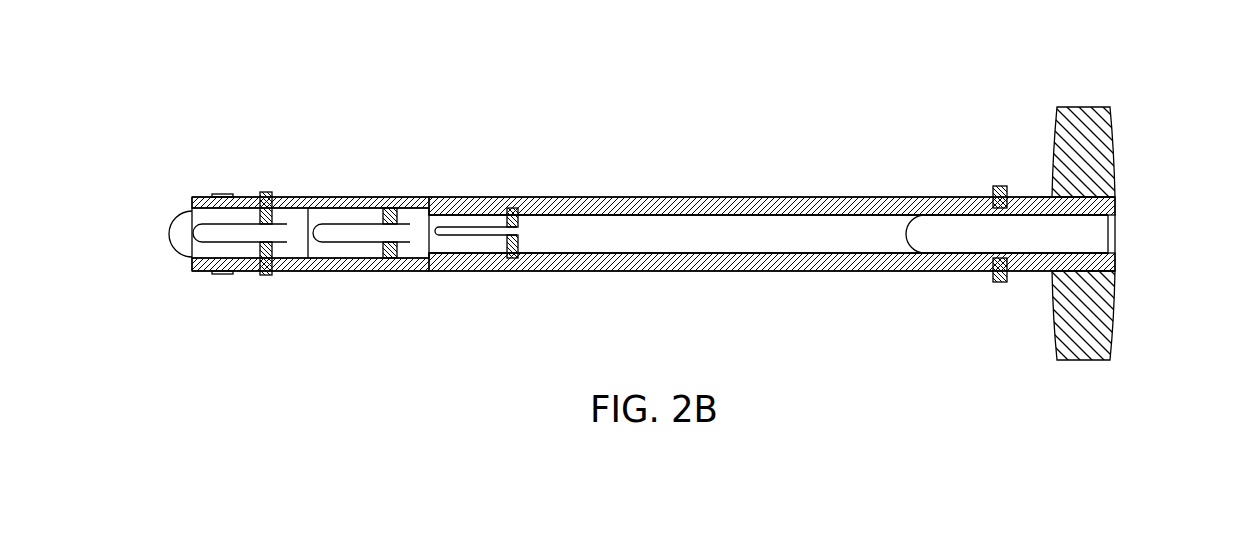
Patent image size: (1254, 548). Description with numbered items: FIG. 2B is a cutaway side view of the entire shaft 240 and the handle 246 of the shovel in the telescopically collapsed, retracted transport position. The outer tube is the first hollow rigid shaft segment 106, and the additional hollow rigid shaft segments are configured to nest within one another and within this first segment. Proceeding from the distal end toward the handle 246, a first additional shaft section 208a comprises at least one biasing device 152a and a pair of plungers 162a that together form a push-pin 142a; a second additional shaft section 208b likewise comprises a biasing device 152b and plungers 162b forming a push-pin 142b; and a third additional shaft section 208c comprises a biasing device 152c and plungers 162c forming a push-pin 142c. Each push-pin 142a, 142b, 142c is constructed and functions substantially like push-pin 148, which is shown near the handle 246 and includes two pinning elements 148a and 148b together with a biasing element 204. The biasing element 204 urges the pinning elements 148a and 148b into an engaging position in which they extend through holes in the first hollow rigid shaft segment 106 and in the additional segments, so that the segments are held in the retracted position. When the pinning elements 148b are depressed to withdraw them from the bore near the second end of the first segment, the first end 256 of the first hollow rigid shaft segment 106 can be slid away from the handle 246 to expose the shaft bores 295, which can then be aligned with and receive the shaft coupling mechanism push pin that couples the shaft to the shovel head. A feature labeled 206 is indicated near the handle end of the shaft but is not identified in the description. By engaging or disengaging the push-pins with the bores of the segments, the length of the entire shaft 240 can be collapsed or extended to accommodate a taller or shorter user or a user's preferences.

The entire shaft 240 is at (268, 72).
The first hollow rigid shaft segment 106 is at (775, 272).
The first end of first hollow rigid shaft segment 256 is at (192, 197).
The shaft bores 295 is at (220, 197).
The first additional shaft section 208a is at (295, 227).
The second additional shaft section 208b is at (415, 212).
The third additional shaft section 208c is at (622, 222).
The biasing device 152a is at (220, 243).
The biasing device 152b is at (360, 243).
The biasing device 152c is at (482, 226).
The plungers 162a is at (265, 197).
The plungers 162b is at (390, 208).
The plungers 162c is at (513, 208).
The push-pin 142a is at (263, 276).
The push-pin 142b is at (392, 271).
The push-pin 142c is at (512, 271).
The biasing element 204 is at (910, 230).
The push-pin 148 is at (1000, 283).
The pinning element 148a is at (997, 280).
The pinning element 148b is at (994, 190).
The proximal end of shaft 206 is at (1046, 197).
The handle 246 is at (1102, 305).